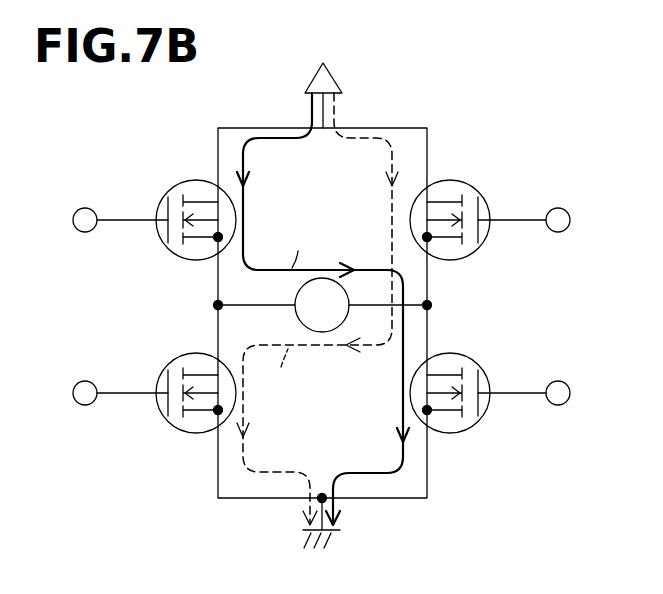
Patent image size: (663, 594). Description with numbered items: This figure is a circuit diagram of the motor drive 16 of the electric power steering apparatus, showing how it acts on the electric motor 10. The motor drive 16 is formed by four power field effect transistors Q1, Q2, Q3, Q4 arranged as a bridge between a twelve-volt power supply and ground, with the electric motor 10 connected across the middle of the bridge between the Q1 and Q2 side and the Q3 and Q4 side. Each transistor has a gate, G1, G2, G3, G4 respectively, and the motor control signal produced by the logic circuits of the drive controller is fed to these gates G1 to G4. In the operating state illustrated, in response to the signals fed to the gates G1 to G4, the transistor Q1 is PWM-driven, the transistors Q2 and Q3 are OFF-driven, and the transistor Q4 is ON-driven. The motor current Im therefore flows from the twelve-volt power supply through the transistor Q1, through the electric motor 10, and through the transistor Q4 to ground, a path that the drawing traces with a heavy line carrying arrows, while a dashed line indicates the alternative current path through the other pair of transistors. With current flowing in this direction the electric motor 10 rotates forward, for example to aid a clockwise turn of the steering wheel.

The motor drive 16 is at (323, 296).
The electric motor 10 is at (322, 332).
The power FET Q1 is at (196, 205).
The power FET Q2 is at (450, 205).
The power FET Q3 is at (196, 414).
The power FET Q4 is at (450, 414).
The gate G1 is at (119, 205).
The gate G2 is at (527, 205).
The gate G3 is at (119, 378).
The gate G4 is at (527, 378).